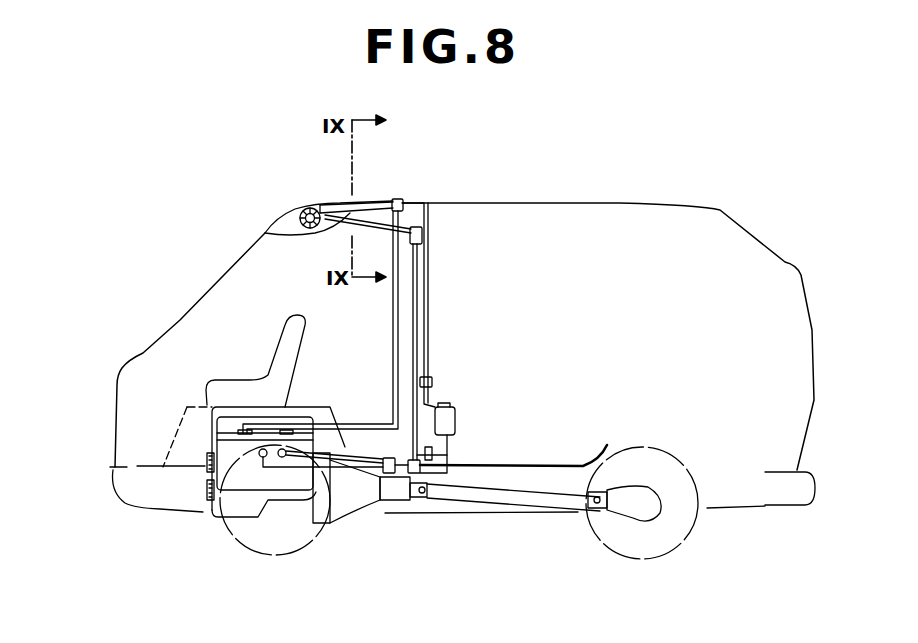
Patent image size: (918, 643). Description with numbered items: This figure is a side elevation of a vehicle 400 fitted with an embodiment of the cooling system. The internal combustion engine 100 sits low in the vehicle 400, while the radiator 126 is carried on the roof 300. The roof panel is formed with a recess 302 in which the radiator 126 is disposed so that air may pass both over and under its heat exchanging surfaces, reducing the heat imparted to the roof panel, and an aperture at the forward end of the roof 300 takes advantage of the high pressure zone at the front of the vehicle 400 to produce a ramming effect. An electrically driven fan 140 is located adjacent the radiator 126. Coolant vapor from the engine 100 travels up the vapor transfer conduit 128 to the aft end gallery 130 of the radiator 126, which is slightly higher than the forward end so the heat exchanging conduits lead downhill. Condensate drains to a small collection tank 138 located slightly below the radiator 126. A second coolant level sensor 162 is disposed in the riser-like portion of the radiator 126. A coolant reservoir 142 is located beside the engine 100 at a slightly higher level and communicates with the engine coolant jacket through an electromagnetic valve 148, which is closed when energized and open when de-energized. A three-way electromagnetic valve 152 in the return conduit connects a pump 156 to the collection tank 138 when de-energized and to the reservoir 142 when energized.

The internal combustion engine 100 is at (267, 480).
The radiator 126 is at (335, 194).
The vapor transfer conduit 128 is at (393, 340).
The aft end gallery 130 is at (400, 198).
The small collection tank 138 is at (422, 237).
The electrically driven fan 140 is at (298, 213).
The coolant reservoir 142 is at (456, 419).
The electromagnetic valve 148 is at (433, 455).
The three-way electromagnetic valve 152 is at (423, 496).
The pump 156 is at (388, 474).
The second coolant level sensor 162 is at (433, 382).
The roof 300 is at (557, 200).
The recess 302 is at (273, 229).
The vehicle 400 is at (618, 353).